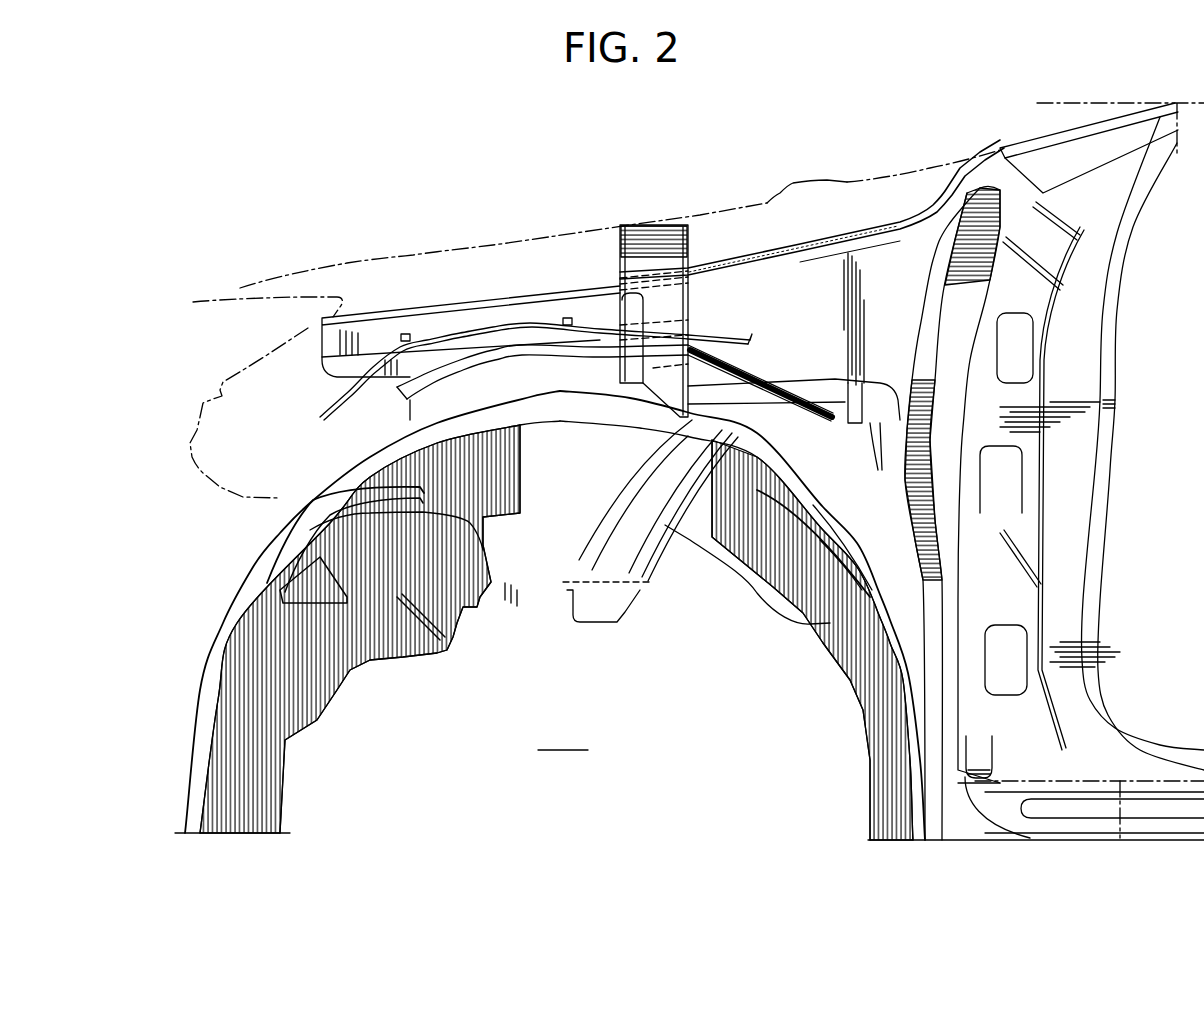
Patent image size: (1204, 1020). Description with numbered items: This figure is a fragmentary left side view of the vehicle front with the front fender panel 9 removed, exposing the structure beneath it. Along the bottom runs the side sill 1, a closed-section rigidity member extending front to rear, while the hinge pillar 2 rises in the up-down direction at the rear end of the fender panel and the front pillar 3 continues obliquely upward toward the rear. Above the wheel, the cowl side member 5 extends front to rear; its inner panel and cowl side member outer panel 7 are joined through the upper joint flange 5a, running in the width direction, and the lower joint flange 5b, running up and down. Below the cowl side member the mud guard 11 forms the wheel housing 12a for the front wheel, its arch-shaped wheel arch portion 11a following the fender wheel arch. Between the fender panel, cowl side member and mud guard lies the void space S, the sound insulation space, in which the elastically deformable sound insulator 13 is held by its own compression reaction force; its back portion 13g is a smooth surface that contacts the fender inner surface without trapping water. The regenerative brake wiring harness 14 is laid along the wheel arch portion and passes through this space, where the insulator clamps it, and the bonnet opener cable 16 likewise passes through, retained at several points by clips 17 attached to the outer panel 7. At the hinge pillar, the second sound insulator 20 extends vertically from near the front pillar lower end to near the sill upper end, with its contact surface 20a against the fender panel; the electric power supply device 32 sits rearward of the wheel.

The side sill 1 is at (1170, 841).
The hinge pillar 2 is at (1110, 471).
The front pillar 3 is at (1030, 116).
The cowl side member 5 is at (765, 250).
The upper joint flange 5a is at (847, 248).
The lower joint flange 5b is at (872, 407).
The cowl side member outer panel 7 is at (827, 323).
The front fender panel 9 is at (478, 228).
The mud guard 11 is at (252, 548).
The wheel arch portion 11a is at (565, 430).
The wheel housing 12a is at (556, 632).
The sound insulator 13 is at (625, 243).
The back portion 13g is at (665, 288).
The regenerative brake wiring harness 14 is at (462, 345).
The bonnet opener cable 16 is at (518, 310).
The clips 17 is at (405, 334).
The second sound insulator 20 is at (972, 481).
The contact surface 20a is at (950, 335).
The electric power supply device 32 is at (1113, 818).
The void space S is at (705, 248).